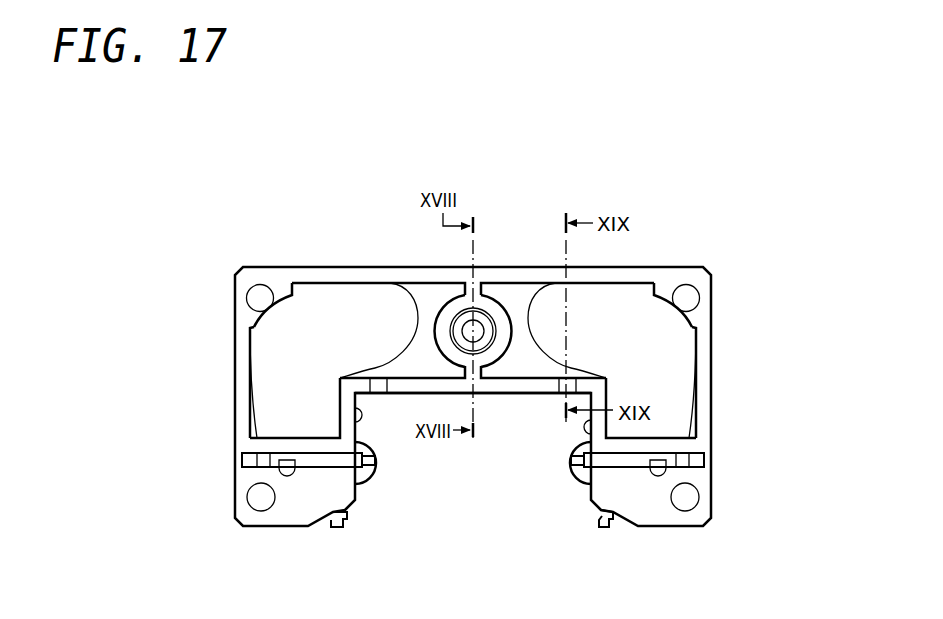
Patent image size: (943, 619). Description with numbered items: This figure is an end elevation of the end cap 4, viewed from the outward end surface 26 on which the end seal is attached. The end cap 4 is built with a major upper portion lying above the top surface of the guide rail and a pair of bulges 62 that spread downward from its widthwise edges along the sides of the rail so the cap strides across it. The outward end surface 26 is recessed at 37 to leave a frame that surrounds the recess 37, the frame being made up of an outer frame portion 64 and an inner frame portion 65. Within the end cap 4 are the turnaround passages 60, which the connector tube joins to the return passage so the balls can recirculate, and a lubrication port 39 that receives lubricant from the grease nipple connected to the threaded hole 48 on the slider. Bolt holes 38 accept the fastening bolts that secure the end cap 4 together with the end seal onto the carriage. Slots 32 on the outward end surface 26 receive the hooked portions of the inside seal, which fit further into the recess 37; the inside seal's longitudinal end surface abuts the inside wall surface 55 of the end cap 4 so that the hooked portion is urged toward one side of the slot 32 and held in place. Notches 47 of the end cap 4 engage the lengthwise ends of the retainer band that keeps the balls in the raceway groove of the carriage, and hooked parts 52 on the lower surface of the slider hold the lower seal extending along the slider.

The end cap 4 is at (377, 262).
The outward end surface 26 is at (472, 361).
The slot 32 is at (383, 390).
The recess 37 is at (518, 307).
The bolt hole 38 is at (258, 297).
The lubrication port 39 is at (478, 323).
The notch 47 is at (318, 459).
The threaded hole 48 is at (450, 312).
The hooked part 52 is at (342, 527).
The inside wall surface 55 is at (357, 418).
The turnaround passage 60 is at (330, 310).
The bulge 62 is at (259, 444).
The outer frame portion 64 is at (541, 277).
The inner frame portion 65 is at (508, 390).